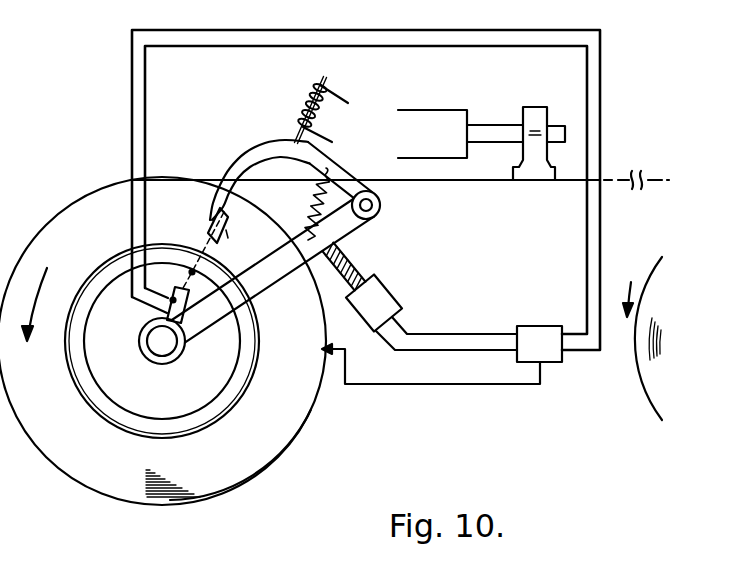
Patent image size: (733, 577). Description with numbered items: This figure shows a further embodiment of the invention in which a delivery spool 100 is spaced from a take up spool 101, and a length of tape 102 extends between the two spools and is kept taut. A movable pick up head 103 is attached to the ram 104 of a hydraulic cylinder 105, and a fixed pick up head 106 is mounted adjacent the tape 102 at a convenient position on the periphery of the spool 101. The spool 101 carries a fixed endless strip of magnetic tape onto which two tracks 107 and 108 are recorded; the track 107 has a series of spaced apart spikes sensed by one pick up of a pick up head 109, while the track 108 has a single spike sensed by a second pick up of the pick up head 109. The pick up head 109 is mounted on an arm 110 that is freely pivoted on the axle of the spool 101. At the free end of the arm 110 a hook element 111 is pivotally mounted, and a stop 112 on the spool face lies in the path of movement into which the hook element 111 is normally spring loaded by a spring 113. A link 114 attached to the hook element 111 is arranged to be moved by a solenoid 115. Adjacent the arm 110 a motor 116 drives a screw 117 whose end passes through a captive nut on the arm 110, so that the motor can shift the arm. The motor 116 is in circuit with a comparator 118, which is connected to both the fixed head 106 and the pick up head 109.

The delivery spool 100 is at (660, 416).
The take up spool 101 is at (244, 441).
The tape 102 is at (399, 184).
The movable pick up head 103 is at (538, 152).
The ram 104 is at (504, 130).
The hydraulic cylinder 105 is at (443, 121).
The fixed pick up head 106 is at (361, 349).
The track 107 is at (223, 413).
The track 108 is at (90, 343).
The pick up head 109 is at (190, 306).
The arm 110 is at (261, 293).
The hook element 111 is at (333, 171).
The stop 112 is at (222, 232).
The spring 113 is at (316, 209).
The link 114 is at (300, 132).
The solenoid 115 is at (312, 99).
The motor 116 is at (386, 310).
The screw 117 is at (363, 264).
The comparator 118 is at (528, 356).